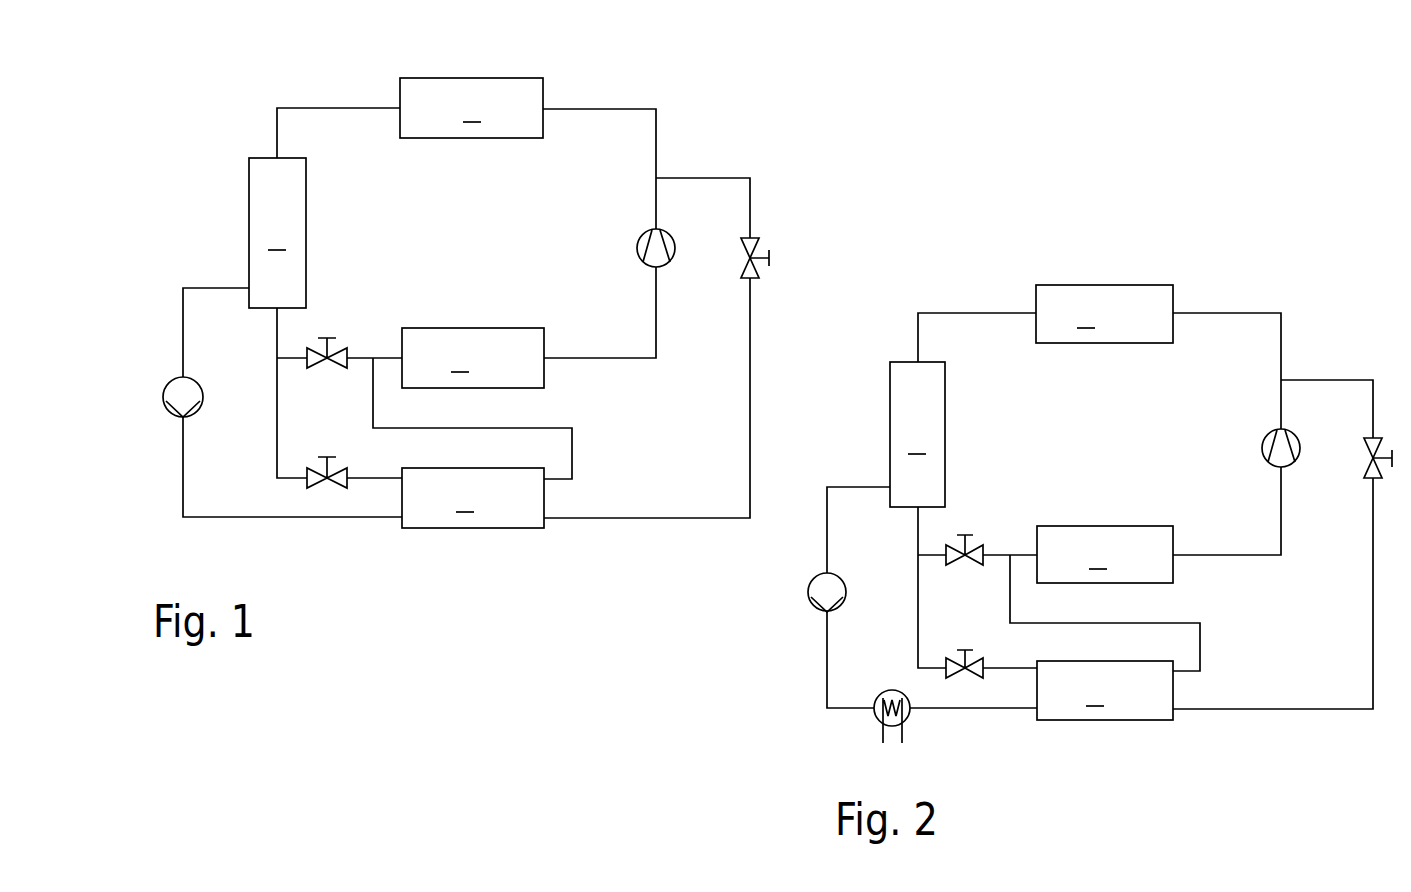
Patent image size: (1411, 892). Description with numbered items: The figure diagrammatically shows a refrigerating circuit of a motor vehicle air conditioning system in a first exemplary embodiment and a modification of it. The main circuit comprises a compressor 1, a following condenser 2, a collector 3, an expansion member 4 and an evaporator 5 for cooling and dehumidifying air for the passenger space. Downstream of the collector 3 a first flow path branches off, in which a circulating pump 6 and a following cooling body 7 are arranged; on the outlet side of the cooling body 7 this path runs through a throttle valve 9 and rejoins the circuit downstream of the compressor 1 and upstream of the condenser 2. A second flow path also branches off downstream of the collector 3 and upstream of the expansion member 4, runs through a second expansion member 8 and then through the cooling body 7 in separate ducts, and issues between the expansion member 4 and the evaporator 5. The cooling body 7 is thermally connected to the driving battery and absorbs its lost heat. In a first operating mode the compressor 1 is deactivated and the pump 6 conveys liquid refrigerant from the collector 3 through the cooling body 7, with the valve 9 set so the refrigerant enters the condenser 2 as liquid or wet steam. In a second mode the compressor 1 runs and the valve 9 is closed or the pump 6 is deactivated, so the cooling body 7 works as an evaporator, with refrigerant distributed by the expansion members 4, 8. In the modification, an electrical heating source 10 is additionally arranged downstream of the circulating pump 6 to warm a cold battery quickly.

In FIG. 1, the compressor 1 is at (640, 250).
In FIG. 2, the compressor 1 is at (1262, 450).
In FIG. 1, the condenser 2 is at (471, 108).
In FIG. 2, the condenser 2 is at (1104, 314).
In FIG. 1, the collector 3 is at (277, 233).
In FIG. 2, the collector 3 is at (917, 434).
In FIG. 1, the expansion member 4 is at (342, 350).
In FIG. 1, the evaporator 5 is at (473, 358).
In FIG. 2, the evaporator 5 is at (1105, 554).
In FIG. 1, the circulating pump 6 is at (175, 378).
In FIG. 2, the circulating pump 6 is at (812, 608).
In FIG. 1, the cooling body 7 is at (473, 498).
In FIG. 2, the cooling body 7 is at (1105, 690).
In FIG. 1, the second expansion member 8 is at (338, 473).
In FIG. 1, the throttle valve 9 is at (755, 243).
In FIG. 2, the throttle valve 9 is at (1367, 477).
In FIG. 2, the electrical heating source 10 is at (910, 717).